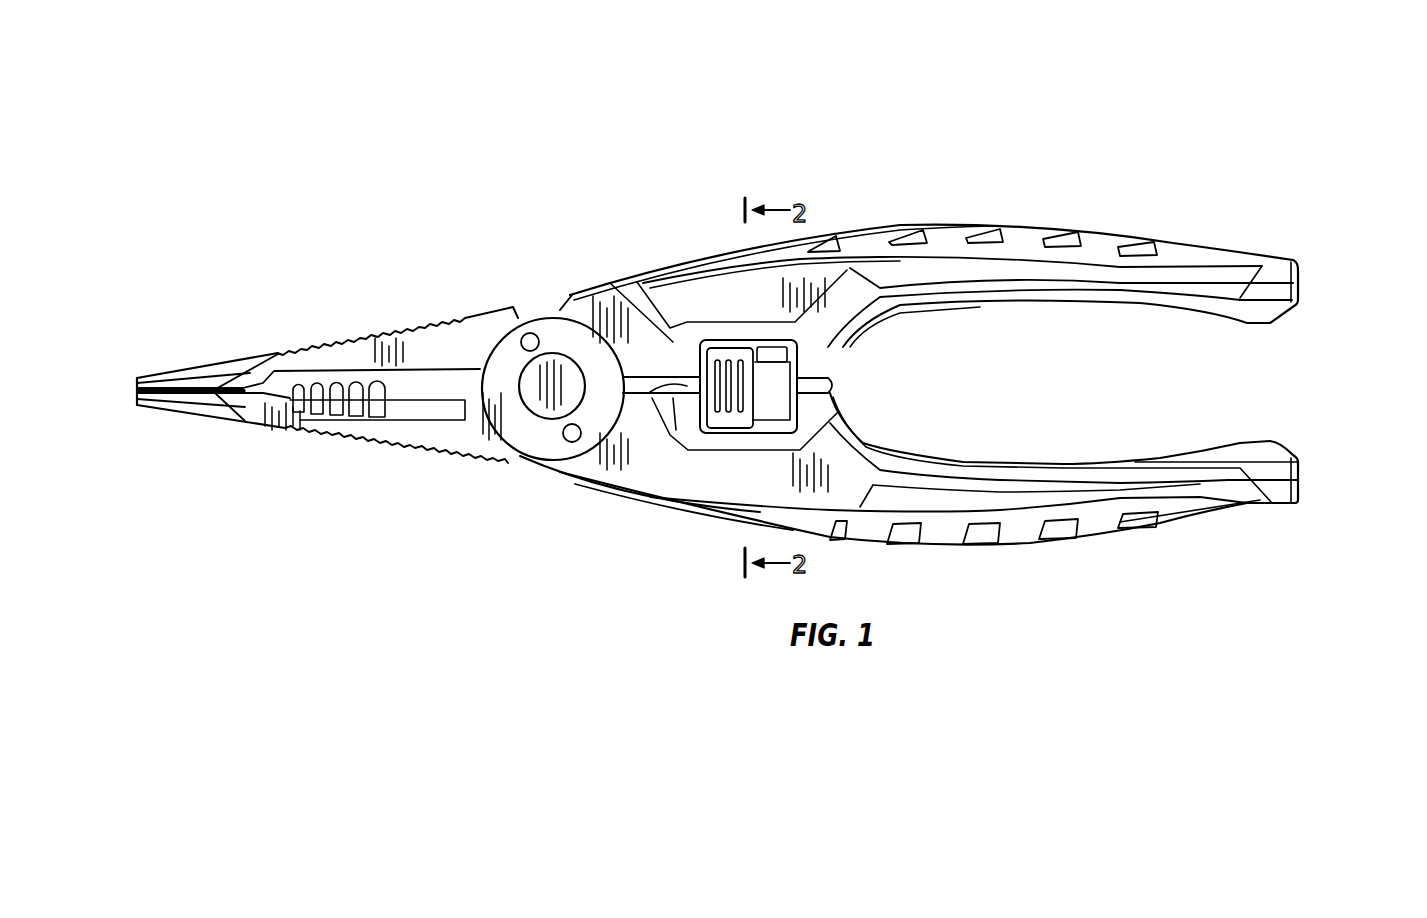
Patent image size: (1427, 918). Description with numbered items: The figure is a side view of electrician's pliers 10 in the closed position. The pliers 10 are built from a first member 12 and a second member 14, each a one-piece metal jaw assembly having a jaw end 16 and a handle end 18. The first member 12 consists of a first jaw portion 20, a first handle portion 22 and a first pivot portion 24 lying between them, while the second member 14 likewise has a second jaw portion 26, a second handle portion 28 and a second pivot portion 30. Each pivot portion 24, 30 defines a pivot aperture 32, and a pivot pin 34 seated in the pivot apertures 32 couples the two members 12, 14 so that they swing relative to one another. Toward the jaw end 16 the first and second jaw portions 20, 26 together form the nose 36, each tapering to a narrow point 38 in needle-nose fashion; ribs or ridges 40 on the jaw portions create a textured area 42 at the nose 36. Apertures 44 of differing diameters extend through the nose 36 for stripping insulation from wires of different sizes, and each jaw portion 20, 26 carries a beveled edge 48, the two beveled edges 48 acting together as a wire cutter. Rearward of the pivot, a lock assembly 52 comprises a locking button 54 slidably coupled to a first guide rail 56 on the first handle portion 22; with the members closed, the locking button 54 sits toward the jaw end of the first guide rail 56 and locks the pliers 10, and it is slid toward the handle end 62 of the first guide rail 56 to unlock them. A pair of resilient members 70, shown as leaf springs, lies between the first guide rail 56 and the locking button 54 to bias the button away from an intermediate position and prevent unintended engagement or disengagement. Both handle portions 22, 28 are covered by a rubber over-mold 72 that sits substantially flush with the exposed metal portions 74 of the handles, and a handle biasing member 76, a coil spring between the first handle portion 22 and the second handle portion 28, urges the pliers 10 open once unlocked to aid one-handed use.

The pliers 10 is at (345, 84).
The first member 12 is at (966, 207).
The second member 14 is at (864, 503).
The jaw end 16 is at (137, 390).
The handle end 18 is at (1300, 295).
The first jaw portion 20 is at (322, 460).
The first handle portion 22 is at (846, 273).
The first pivot portion 24 is at (565, 290).
The second jaw portion 26 is at (394, 325).
The second handle portion 28 is at (843, 482).
The second pivot portion 30 is at (557, 473).
The pivot aperture 32 is at (505, 365).
The pivot pin 34 is at (543, 390).
The nose 36 is at (327, 311).
The narrow point 38 is at (137, 408).
The ribs or ridges 40 is at (308, 267).
The textured area 42 is at (408, 315).
The apertures 44 is at (287, 427).
The beveled edge 48 is at (417, 393).
The lock assembly 52 is at (776, 335).
The locking button 54 is at (715, 410).
The first guide rail 56 is at (765, 395).
The handle end 62 is at (735, 336).
The resilient member 70 is at (779, 347).
The over-mold 72 is at (1090, 240).
The exposed metal portions 74 is at (634, 283).
The handle biasing member 76 is at (687, 395).